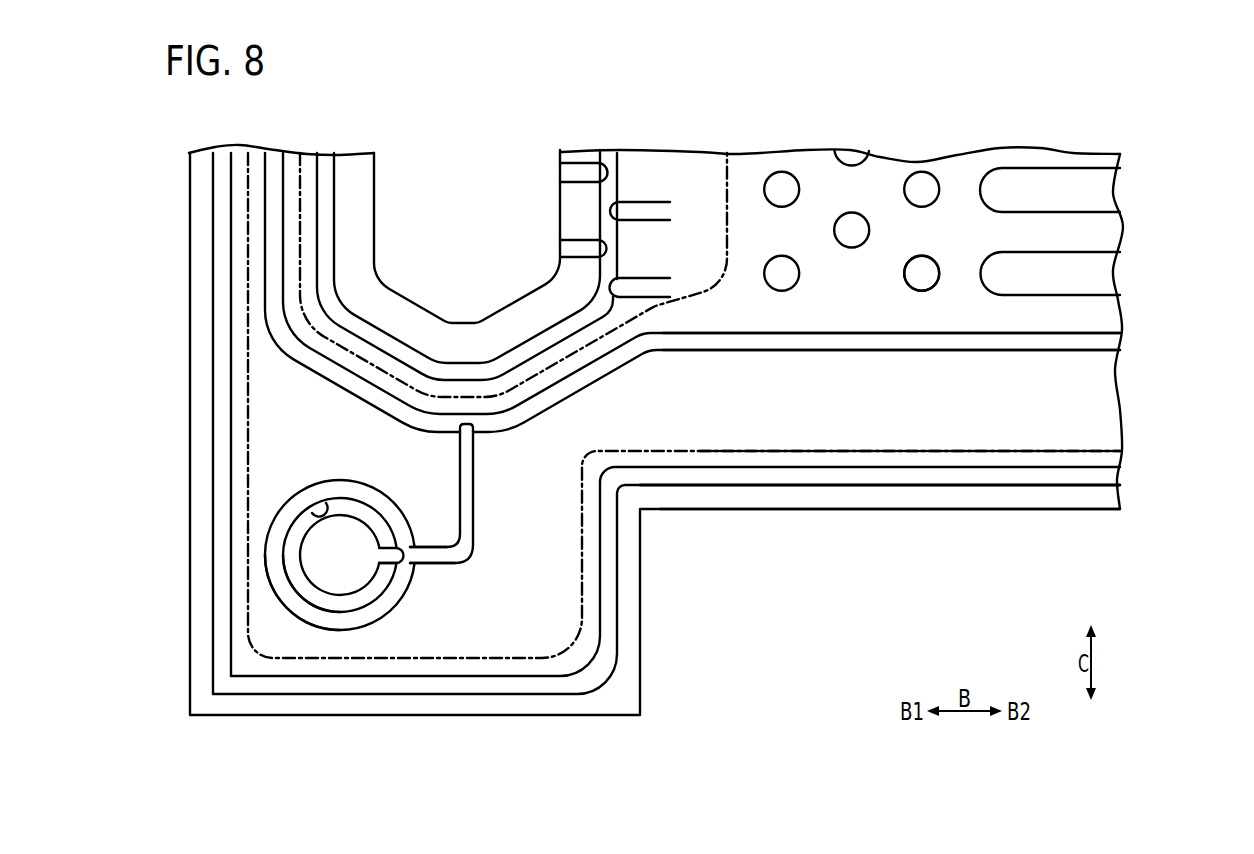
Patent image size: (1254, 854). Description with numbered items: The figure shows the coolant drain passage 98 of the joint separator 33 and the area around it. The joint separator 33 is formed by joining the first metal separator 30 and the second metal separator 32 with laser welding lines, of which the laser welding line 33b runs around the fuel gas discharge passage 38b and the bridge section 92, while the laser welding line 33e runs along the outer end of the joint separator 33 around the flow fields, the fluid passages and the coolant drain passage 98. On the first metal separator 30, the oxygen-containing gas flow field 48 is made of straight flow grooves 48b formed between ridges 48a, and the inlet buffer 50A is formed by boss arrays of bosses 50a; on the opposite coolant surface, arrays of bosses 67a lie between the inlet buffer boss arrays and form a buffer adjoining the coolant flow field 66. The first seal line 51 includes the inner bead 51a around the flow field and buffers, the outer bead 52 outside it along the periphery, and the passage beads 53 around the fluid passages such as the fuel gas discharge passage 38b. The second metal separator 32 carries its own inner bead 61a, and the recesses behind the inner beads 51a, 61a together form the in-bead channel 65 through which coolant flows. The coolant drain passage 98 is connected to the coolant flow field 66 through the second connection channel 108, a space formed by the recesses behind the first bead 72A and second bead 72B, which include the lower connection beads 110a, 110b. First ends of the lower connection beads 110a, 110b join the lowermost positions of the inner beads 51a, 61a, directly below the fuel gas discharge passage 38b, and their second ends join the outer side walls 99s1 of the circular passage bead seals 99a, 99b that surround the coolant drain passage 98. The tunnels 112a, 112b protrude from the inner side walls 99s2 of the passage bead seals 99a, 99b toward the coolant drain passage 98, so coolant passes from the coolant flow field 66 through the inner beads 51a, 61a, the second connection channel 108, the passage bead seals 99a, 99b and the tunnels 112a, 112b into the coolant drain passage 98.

The first metal separator 30 is at (182, 663).
The second metal separator 32 is at (182, 703).
The joint separator 33 is at (587, 100).
The laser welding line 33b is at (300, 225).
The laser welding line 33e is at (1045, 451).
The fuel gas discharge passage 38b is at (408, 190).
The oxygen-containing gas flow field 48 is at (1106, 231).
The ridges 48a is at (1093, 193).
The straight flow grooves 48b is at (1093, 238).
The inlet buffer 50A is at (913, 190).
The bosses 50a is at (921, 273).
The first seal line 51 is at (928, 495).
The inner bead 51a is at (957, 340).
The outer bead 52 is at (948, 477).
The passage beads 53 is at (327, 263).
The inner bead 61a is at (982, 340).
The in-bead channel 65 is at (707, 340).
The coolant flow field 66 is at (1097, 313).
The bosses 67a is at (852, 232).
The first bead 72A is at (821, 495).
The second bead 72B is at (852, 495).
The bridge section 92 is at (683, 272).
The coolant drain passage 98 is at (323, 538).
The passage bead seal 99a is at (339, 620).
The passage bead seal 99b is at (325, 617).
The outer side walls 99s1 is at (372, 488).
The inner side walls 99s2 is at (310, 510).
The second connection channel 108 is at (433, 552).
The lower connection bead 110a is at (425, 557).
The lower connection bead 110b is at (443, 557).
The tunnel 112a is at (385, 565).
The tunnel 112b is at (380, 555).